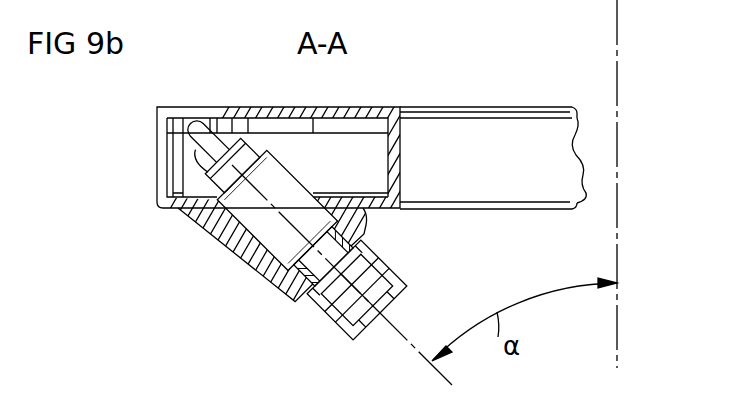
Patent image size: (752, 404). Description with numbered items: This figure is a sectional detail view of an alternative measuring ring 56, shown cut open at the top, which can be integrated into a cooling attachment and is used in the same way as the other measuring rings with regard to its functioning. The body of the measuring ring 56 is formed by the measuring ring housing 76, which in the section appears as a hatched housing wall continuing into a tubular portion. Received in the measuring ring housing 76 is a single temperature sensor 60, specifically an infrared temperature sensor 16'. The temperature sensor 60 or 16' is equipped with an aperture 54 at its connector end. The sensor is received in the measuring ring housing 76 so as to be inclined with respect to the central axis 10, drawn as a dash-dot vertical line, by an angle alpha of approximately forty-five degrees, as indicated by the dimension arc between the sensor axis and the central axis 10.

The central axis 10 is at (617, 330).
The infrared temperature sensor 16' is at (292, 242).
The aperture 54 is at (322, 333).
The measuring ring 56 is at (493, 134).
The temperature sensor 60 is at (292, 242).
The measuring ring housing 76 is at (536, 85).